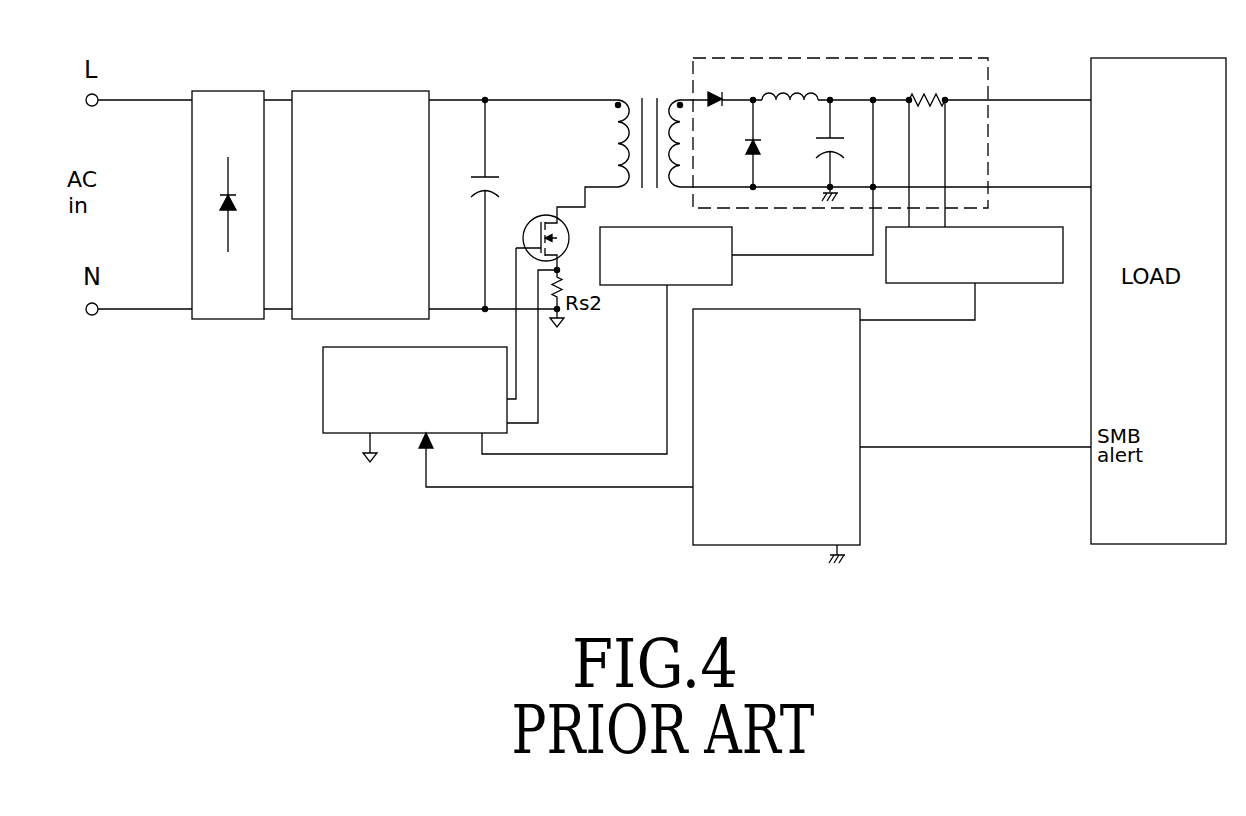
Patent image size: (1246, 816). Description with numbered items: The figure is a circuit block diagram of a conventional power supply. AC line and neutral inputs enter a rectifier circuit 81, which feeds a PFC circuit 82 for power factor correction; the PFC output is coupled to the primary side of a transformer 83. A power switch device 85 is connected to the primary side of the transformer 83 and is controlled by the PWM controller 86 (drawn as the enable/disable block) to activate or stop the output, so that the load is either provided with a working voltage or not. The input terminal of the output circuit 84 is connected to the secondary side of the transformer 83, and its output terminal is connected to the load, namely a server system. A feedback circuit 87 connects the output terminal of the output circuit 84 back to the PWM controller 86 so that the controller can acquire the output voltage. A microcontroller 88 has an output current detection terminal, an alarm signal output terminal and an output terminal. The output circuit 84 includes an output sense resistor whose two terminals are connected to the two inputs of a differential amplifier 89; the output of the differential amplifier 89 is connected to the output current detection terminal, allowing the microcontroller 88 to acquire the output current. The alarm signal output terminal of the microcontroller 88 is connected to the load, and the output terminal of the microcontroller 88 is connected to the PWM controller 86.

The rectifier circuit 81 is at (238, 91).
The PFC circuit 82 is at (354, 91).
The transformer 83 is at (649, 86).
The output circuit 84 is at (895, 58).
The power switch device 85 is at (537, 216).
The PWM controller 86 is at (323, 397).
The feedback circuit 87 is at (732, 268).
The microcontroller 88 is at (693, 512).
The differential amplifier 89 is at (985, 283).